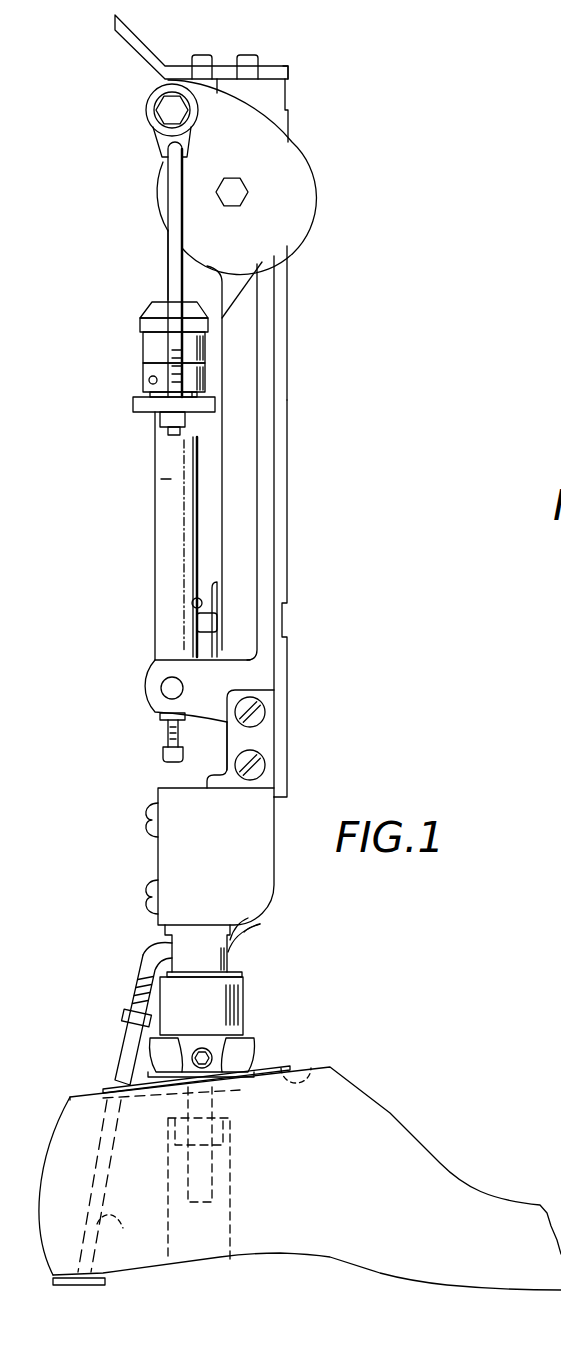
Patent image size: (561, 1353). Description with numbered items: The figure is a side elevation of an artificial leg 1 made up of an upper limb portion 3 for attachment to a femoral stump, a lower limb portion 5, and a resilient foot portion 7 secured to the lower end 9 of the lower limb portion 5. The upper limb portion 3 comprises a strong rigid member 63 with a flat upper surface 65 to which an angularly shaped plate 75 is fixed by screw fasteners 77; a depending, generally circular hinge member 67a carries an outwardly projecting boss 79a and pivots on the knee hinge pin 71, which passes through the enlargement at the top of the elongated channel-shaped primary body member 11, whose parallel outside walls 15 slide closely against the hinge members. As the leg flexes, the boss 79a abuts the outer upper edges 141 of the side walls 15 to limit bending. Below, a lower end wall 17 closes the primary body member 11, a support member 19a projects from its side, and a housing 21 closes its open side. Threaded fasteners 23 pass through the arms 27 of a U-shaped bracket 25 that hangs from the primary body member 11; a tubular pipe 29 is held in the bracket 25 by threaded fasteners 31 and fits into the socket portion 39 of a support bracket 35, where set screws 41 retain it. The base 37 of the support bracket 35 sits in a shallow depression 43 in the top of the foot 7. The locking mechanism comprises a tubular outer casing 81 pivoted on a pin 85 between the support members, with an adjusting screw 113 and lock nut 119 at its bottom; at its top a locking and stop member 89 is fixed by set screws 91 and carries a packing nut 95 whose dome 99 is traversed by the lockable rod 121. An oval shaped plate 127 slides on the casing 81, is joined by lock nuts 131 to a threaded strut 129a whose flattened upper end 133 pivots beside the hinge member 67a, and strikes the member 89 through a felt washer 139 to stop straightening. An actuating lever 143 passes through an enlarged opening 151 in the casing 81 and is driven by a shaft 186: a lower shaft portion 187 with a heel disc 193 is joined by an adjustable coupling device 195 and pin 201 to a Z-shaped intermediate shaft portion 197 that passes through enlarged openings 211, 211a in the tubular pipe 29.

The artificial leg 1 is at (292, 295).
The upper limb portion 3 is at (283, 72).
The lower limb portion 5 is at (288, 468).
The foot portion 7 is at (392, 1112).
The lower end 9 is at (181, 1170).
The primary body member 11 is at (271, 427).
The outside walls 15 is at (251, 462).
The lower end wall 17 is at (222, 767).
The support member 19a is at (228, 694).
The housing 21 is at (218, 582).
The threaded fasteners 23 is at (263, 760).
The U-shaped bracket 25 is at (224, 865).
The arms 27 is at (268, 711).
The tubular pipe 29 is at (234, 969).
The threaded fasteners 31 is at (150, 880).
The support bracket 35 is at (250, 1040).
The base 37 is at (262, 1066).
The socket portion 39 is at (239, 1003).
The set screws 41 is at (203, 1047).
The shallow depression 43 is at (297, 1064).
The rigid member 63 is at (287, 93).
The upper surface 65 is at (270, 66).
The hinge member 67a is at (297, 170).
The knee hinge pin 71 is at (232, 183).
The angularly shaped plate 75 is at (290, 72).
The screw fasteners 77 is at (243, 55).
The boss 79a is at (150, 97).
The tubular outer casing 81 is at (151, 536).
The pin 85 is at (164, 682).
The locking and stop member 89 is at (149, 380).
The set screws 91 is at (150, 363).
The packing nut 95 is at (143, 340).
The dome 99 is at (152, 305).
The adjusting screw 113 is at (166, 740).
The lock nut 119 is at (159, 717).
The lockable rod 121 is at (163, 283).
The oval shaped plate 127 is at (137, 405).
The threaded strut 129a is at (164, 240).
The lock nuts 131 is at (150, 395).
The flattened upper end 133 is at (153, 131).
The felt washer 139 is at (199, 394).
The outer upper edges 141 is at (238, 295).
The actuating lever 143 is at (196, 625).
The enlarged opening 151 is at (192, 600).
The shaft 186 is at (262, 931).
The lower shaft portion 187 is at (121, 1237).
The disc 193 is at (105, 1283).
The adjustable coupling device 195 is at (120, 1022).
The intermediate shaft portion 197 is at (162, 946).
The pin 201 is at (118, 1043).
The enlarged opening 211 is at (144, 967).
The enlarged opening 211a is at (234, 952).